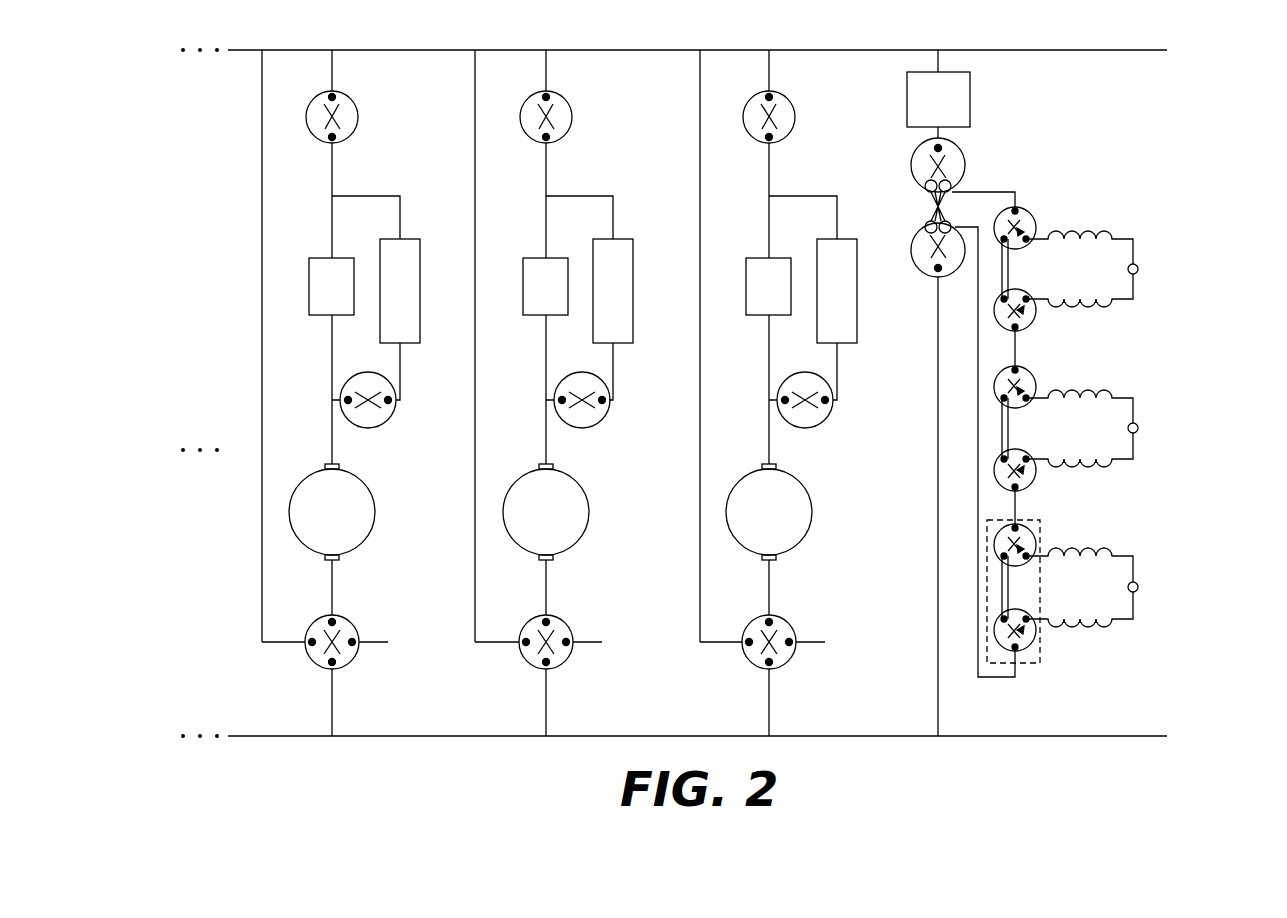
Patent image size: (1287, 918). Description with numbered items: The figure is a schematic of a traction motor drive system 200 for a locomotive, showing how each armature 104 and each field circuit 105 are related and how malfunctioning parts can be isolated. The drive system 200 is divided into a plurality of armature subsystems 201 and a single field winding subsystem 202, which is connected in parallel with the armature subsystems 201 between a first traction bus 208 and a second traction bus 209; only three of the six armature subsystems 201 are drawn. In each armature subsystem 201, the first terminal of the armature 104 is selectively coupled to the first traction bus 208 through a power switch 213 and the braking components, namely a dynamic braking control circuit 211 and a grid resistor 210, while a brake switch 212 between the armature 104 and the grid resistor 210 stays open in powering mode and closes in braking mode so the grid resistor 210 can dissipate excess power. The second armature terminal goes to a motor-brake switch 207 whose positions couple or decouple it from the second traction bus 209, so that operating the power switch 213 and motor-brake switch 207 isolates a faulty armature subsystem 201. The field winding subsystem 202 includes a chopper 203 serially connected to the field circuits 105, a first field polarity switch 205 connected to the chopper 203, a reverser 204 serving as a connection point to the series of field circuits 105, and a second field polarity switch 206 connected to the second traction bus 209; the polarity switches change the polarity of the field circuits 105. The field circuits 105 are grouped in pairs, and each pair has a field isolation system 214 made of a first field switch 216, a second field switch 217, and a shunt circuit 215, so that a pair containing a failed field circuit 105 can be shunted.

The traction motor drive system 200 is at (313, 26).
The first traction bus 208 is at (719, 49).
The second traction bus 209 is at (719, 734).
The armature subsystem 201 is at (237, 603).
The field winding subsystem 202 is at (1229, 580).
The power switch 213 is at (569, 117).
The dynamic braking control circuit 211 is at (550, 286).
The grid resistor 210 is at (594, 298).
The brake switch 212 is at (582, 413).
The armature 104 is at (550, 512).
The motor-brake switch 207 is at (543, 652).
The chopper 203 is at (925, 110).
The first field polarity switch 205 is at (958, 165).
The reverser 204 is at (919, 206).
The second field polarity switch 206 is at (925, 259).
The first field switch 216 is at (1026, 210).
The second field switch 217 is at (1080, 672).
The field circuit 105 is at (1082, 415).
The shunt circuit 215 is at (997, 588).
The field isolation system 214 is at (1030, 664).